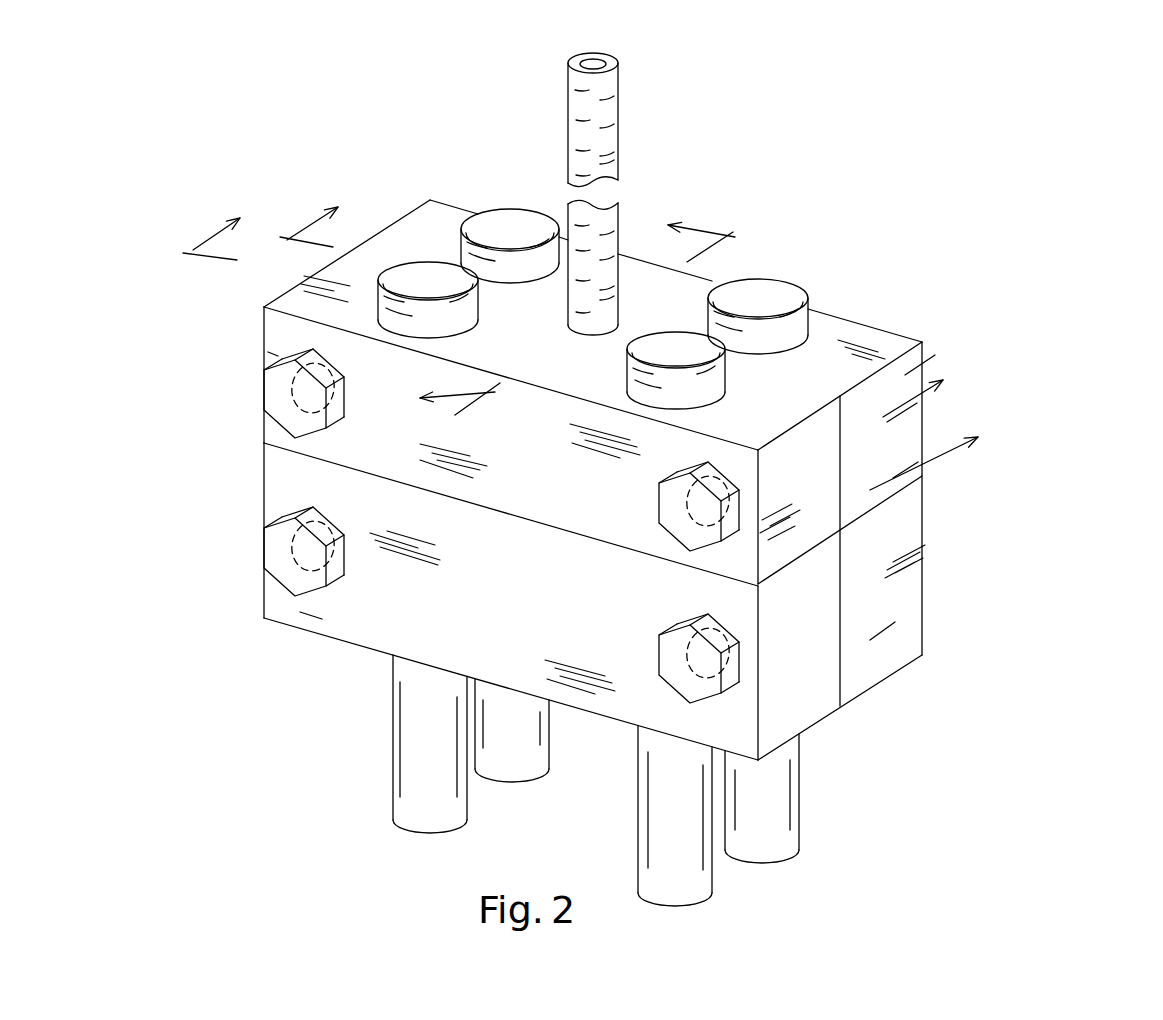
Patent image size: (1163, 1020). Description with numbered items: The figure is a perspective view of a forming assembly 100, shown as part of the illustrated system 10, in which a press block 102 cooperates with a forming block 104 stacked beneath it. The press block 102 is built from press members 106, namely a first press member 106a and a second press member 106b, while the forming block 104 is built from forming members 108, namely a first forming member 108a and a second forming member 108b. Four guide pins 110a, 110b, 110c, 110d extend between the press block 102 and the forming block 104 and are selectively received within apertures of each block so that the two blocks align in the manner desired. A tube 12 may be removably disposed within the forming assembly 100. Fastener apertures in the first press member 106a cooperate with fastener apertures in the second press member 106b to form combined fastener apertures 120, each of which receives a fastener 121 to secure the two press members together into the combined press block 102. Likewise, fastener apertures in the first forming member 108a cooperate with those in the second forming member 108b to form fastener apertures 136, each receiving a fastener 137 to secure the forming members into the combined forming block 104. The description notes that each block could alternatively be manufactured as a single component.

The fluid system 10 is at (1062, 120).
The tube 12 is at (648, 88).
The forming assembly 100 is at (890, 188).
The press block 102 is at (900, 308).
The forming block 104 is at (945, 575).
The upper manifold block 106 is at (240, 312).
The first press member 106a is at (913, 368).
The second press member 106b is at (275, 358).
The lower manifold block 108 is at (350, 665).
The first forming member 108a is at (882, 628).
The second forming member 108b is at (318, 617).
The guide pin 110a is at (510, 224).
The guide pin 110b is at (765, 292).
The guide pin 110c is at (428, 278).
The guide pin 110d is at (680, 345).
The fastener aperture 120 is at (288, 380).
The fastener 121 is at (290, 418).
The fastener aperture 136 is at (266, 564).
The fastener 137 is at (275, 541).